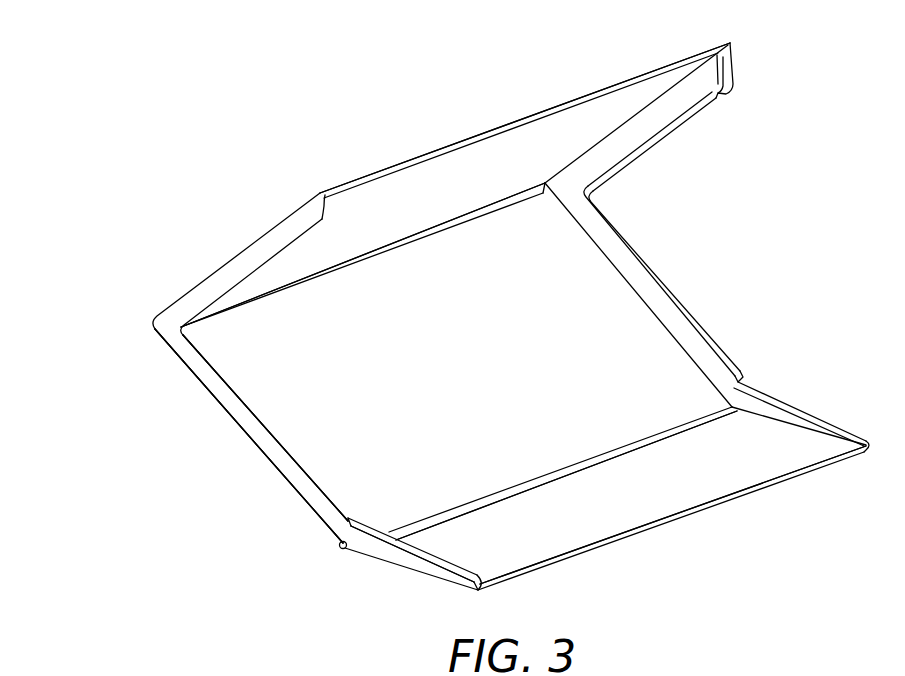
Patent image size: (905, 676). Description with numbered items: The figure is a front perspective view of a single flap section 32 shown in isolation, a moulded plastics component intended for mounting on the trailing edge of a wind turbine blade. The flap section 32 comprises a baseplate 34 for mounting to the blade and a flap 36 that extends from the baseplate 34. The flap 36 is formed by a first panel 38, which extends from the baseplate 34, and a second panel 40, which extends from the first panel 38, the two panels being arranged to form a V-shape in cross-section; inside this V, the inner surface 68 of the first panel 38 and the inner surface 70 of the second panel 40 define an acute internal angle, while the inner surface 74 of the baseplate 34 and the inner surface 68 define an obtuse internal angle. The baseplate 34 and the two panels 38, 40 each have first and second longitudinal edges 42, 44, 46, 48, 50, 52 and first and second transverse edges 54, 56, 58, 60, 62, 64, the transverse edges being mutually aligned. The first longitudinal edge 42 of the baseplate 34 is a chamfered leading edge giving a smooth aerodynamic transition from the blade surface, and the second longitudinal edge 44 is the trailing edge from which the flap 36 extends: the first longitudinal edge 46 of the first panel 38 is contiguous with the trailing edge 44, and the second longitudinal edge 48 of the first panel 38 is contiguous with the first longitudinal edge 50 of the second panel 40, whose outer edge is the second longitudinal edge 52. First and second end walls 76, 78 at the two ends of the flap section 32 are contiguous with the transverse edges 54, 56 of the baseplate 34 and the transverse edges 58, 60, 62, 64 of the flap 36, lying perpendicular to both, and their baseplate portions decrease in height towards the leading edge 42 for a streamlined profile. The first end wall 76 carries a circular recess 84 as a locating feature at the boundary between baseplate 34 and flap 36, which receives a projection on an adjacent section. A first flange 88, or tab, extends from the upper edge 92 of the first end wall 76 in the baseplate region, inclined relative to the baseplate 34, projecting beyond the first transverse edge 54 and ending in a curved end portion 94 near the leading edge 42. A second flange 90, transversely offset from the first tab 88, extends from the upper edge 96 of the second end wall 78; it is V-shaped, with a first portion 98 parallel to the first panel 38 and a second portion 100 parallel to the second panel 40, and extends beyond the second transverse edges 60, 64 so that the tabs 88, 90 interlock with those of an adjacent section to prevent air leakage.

The flap section 32 is at (88, 510).
The baseplate 34 is at (690, 470).
The flap 36 is at (773, 230).
The first panel 38 is at (336, 434).
The second panel 40 is at (470, 170).
The first longitudinal edge of the baseplate 42 is at (598, 540).
The second longitudinal edge of the baseplate 44 is at (493, 502).
The first longitudinal edge of the first flap panel 46 is at (590, 457).
The second longitudinal edge of the first flap panel 48 is at (350, 265).
The first longitudinal edge of the second flap panel 50 is at (497, 193).
The second longitudinal edge of the second flap panel 52 is at (553, 110).
The first transverse edge of the baseplate 54 is at (407, 570).
The second transverse edge of the baseplate 56 is at (830, 437).
The first transverse edge of the first flap panel 58 is at (200, 388).
The second transverse edge of the first flap panel 60 is at (690, 314).
The first transverse edge of the second flap panel 62 is at (238, 253).
The second transverse edge of the second flap panel 64 is at (684, 64).
The inner surface of the first flap panel 68 is at (629, 309).
The inner surface of the second flap panel 70 is at (381, 191).
The inner surface of the baseplate 74 is at (758, 452).
The first end wall 76 is at (243, 417).
The second end wall 78 is at (663, 117).
The circular recess 84 is at (338, 550).
The first flange 88 is at (390, 533).
The second flange 90 is at (613, 223).
The upper edge of the first end wall 92 is at (233, 389).
The curved end portion 94 is at (483, 587).
The upper edge of the second end wall 96 is at (790, 403).
The first portion of the second tab 98 is at (742, 373).
The second portion of the second tab 100 is at (698, 108).